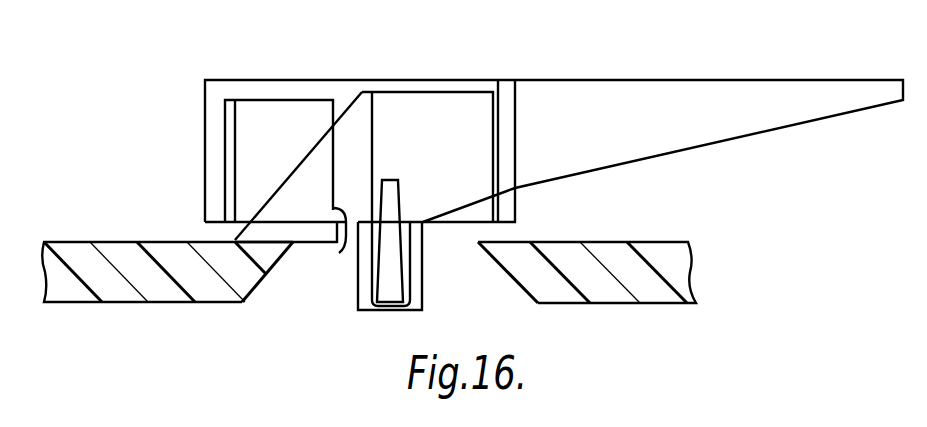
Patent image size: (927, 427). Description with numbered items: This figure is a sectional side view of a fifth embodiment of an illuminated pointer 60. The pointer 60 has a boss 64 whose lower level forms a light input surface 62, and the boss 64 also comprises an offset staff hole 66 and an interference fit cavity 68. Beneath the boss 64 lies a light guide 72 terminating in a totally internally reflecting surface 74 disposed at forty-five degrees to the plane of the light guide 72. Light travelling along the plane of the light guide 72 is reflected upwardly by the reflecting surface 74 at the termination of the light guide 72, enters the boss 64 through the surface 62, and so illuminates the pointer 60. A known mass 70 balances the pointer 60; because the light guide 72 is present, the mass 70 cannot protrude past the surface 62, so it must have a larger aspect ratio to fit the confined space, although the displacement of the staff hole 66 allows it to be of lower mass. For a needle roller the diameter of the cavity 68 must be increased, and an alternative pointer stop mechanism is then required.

The pointer 60 is at (580, 200).
The light input surface 62 is at (312, 246).
The boss 64 is at (402, 118).
The offset staff hole 66 is at (388, 278).
The interference fit cavity 68 is at (338, 246).
The known mass 70 is at (240, 150).
The light guide 72 is at (65, 300).
The totally internally reflecting surface 74 is at (247, 285).